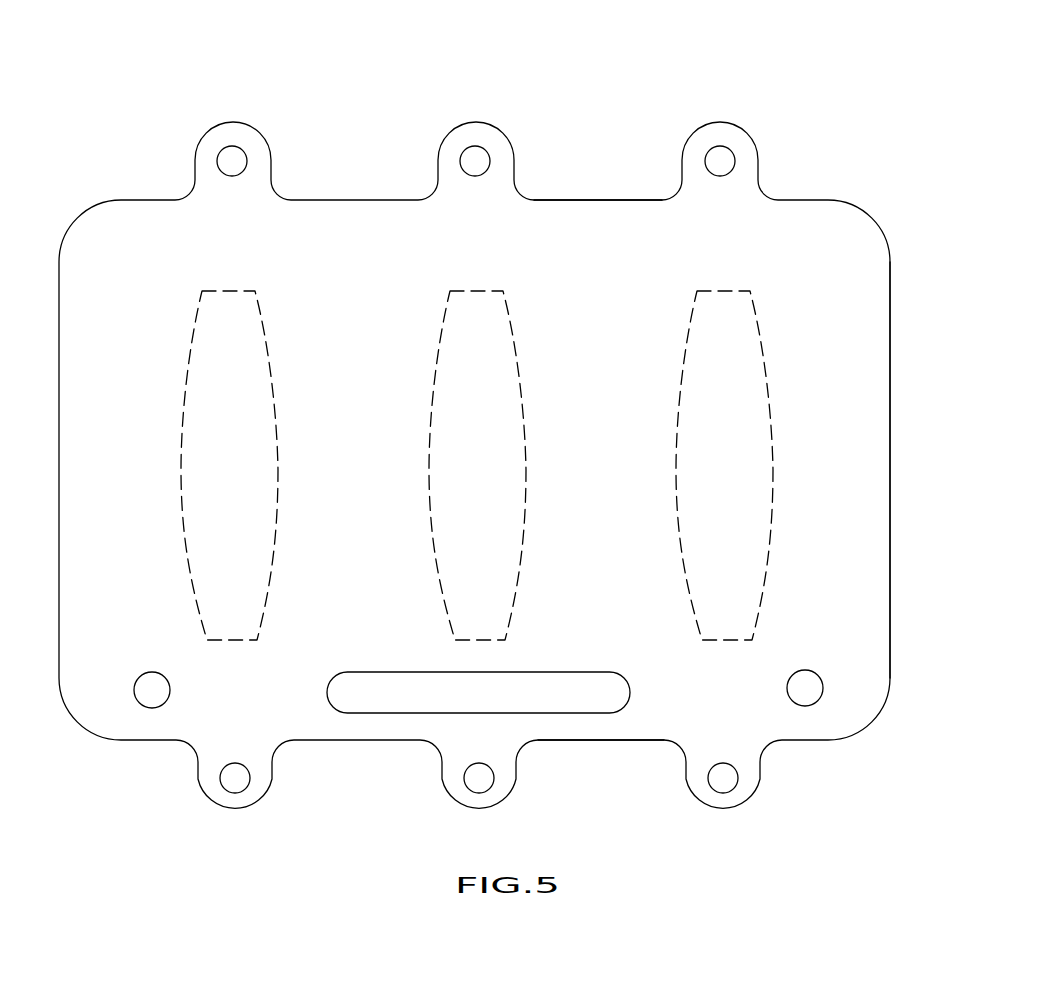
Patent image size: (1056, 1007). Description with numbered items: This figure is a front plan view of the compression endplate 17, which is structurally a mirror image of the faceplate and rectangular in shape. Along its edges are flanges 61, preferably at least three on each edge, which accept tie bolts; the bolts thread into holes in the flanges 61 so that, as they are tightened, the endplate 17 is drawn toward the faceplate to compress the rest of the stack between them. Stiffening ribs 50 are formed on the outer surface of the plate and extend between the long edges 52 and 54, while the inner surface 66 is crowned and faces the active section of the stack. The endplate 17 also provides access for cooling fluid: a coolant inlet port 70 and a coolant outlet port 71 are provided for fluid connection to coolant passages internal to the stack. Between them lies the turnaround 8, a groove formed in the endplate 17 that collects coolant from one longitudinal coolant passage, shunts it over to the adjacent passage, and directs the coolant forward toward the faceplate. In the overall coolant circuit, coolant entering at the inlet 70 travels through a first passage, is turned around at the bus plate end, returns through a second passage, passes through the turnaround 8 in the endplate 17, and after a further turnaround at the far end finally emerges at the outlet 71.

The endplate 17 is at (924, 296).
The flanges 61 is at (455, 145).
The long edge 54 is at (583, 200).
The long edge 52 is at (637, 738).
The crowned inner surface 66 is at (836, 515).
The stiffening ribs 50 is at (272, 372).
The coolant outlet port 71 is at (147, 670).
The coolant inlet port 70 is at (823, 685).
The turnaround 8 is at (355, 672).